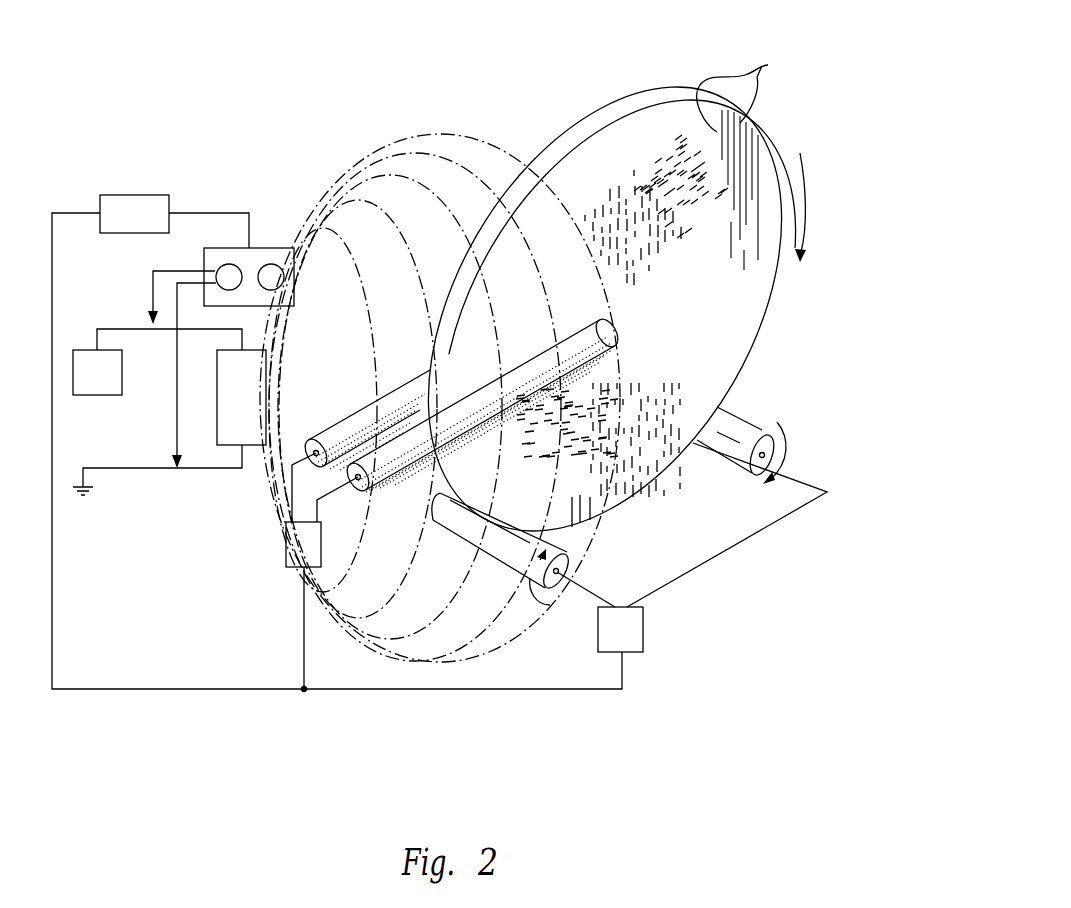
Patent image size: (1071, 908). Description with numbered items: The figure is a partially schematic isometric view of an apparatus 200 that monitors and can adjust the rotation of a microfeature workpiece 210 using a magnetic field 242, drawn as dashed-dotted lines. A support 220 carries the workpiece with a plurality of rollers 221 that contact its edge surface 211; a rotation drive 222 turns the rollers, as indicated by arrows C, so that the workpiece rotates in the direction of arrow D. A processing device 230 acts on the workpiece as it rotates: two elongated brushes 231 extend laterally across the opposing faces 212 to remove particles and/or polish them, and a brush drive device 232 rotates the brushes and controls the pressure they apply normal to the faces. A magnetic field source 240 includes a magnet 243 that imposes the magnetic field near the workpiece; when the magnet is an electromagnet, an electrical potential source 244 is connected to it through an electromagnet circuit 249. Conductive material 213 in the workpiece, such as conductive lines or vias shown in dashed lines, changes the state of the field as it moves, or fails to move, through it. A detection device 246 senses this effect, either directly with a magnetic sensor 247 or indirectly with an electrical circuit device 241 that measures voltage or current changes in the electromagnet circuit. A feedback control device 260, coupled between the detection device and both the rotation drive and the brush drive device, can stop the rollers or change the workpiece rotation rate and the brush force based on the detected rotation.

The apparatus 200 is at (366, 757).
The microfeature workpiece 210 is at (611, 315).
The edge surface 211 is at (577, 131).
The faces 212 is at (762, 66).
The conductive material 213 is at (648, 242).
The support 220 is at (742, 560).
The rollers 221 is at (507, 555).
The rotation drive 222 is at (643, 628).
The processing device 230 is at (388, 506).
The brushes 231 is at (365, 415).
The brush drive device 232 is at (287, 552).
The magnetic field source 240 is at (161, 498).
The electrical circuit device 241 is at (230, 264).
The magnetic field 242 is at (353, 633).
The magnet 243 is at (266, 400).
The electrical potential source 244 is at (97, 395).
The detection device 246 is at (274, 236).
The magnetic sensor 247 is at (284, 280).
The electromagnet circuit 249 is at (128, 328).
The feedback control device 260 is at (132, 195).